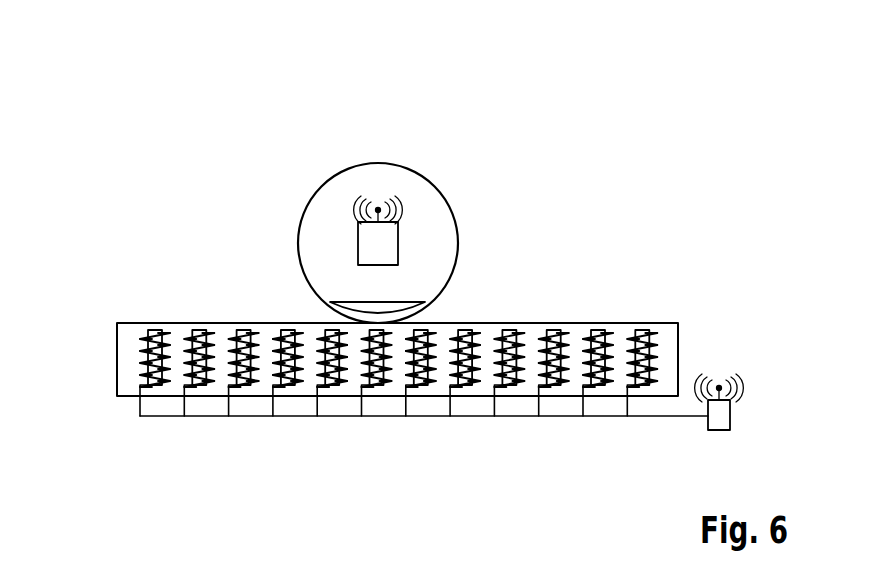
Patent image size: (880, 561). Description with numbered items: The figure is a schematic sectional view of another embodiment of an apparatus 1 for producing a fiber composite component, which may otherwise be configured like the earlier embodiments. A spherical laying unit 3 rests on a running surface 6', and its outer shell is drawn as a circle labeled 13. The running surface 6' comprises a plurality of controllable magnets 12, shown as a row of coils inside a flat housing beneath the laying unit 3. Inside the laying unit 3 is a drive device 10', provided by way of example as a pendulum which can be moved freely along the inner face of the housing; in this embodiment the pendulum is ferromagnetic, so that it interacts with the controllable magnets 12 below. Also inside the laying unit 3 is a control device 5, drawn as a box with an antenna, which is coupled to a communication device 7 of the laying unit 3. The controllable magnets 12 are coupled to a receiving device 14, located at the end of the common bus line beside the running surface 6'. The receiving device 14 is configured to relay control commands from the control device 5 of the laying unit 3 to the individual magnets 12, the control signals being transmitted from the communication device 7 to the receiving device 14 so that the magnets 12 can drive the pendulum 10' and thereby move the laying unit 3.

The apparatus 1 is at (480, 90).
The laying unit 3 is at (297, 136).
The control device 5 is at (398, 240).
The communication device 7 is at (392, 207).
The drive device 10' is at (420, 291).
The controllable magnets 12 is at (193, 323).
The ball shell 13 is at (337, 163).
The running surface 6' is at (369, 359).
The receiving device 14 is at (730, 410).